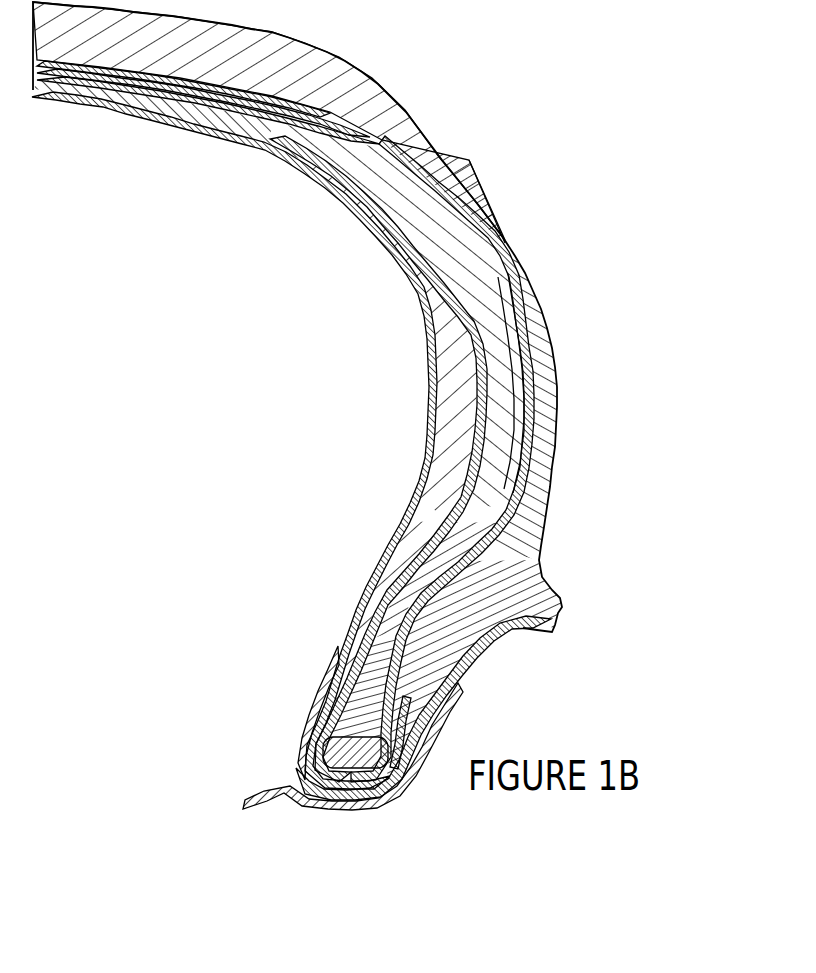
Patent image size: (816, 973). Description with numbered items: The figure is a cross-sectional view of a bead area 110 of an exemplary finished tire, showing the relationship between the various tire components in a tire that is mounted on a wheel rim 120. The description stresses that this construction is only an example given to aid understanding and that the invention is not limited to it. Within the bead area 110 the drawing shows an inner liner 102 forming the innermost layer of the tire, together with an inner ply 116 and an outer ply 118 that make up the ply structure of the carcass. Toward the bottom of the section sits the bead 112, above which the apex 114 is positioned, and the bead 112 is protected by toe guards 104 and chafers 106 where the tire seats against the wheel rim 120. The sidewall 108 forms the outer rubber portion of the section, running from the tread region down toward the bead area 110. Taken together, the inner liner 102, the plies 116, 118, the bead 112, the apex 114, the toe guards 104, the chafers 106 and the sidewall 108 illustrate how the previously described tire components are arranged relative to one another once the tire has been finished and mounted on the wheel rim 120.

The bead area 110 is at (659, 453).
The inner liner 102 is at (357, 617).
The toe guard 104 is at (408, 733).
The chafer 106 is at (440, 670).
The sidewall 108 is at (540, 497).
The bead 112 is at (323, 732).
The apex 114 is at (343, 668).
The inner ply 116 is at (446, 520).
The outer ply 118 is at (530, 480).
The wheel rim 120 is at (270, 803).